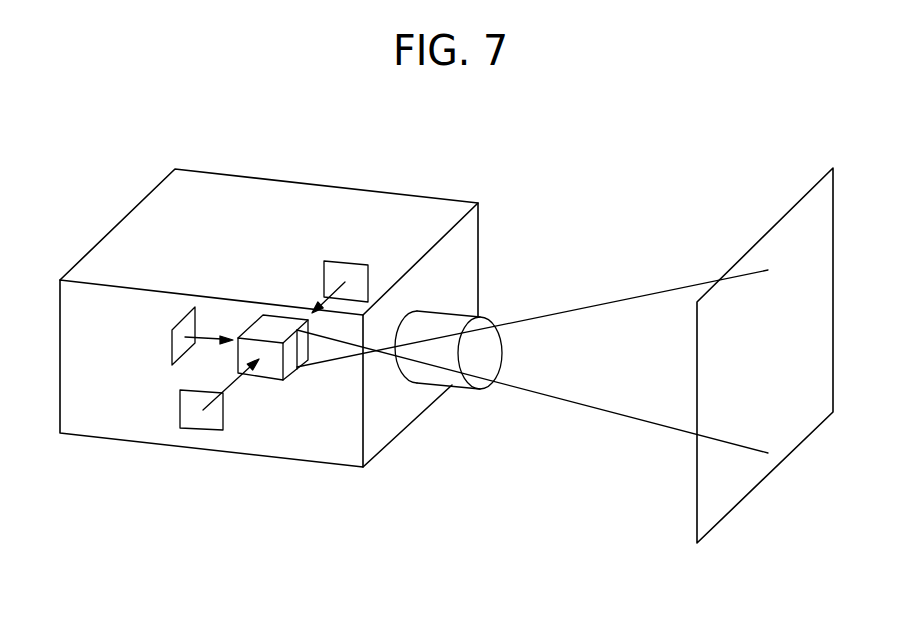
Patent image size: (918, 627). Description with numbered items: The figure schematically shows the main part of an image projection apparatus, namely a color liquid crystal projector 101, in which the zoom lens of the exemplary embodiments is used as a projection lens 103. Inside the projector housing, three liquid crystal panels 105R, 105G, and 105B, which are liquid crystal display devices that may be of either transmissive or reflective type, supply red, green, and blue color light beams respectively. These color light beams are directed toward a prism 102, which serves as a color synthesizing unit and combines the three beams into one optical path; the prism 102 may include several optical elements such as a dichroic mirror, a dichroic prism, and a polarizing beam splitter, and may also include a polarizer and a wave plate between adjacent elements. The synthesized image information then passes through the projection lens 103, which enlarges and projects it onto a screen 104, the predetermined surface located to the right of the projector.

The color liquid crystal projector 101 is at (130, 218).
The prism 102 is at (270, 370).
The projection lens 103 is at (455, 384).
The screen 104 is at (825, 320).
The liquid crystal panel 105B is at (370, 240).
The liquid crystal panel 105G is at (178, 338).
The liquid crystal panel 105R is at (185, 408).